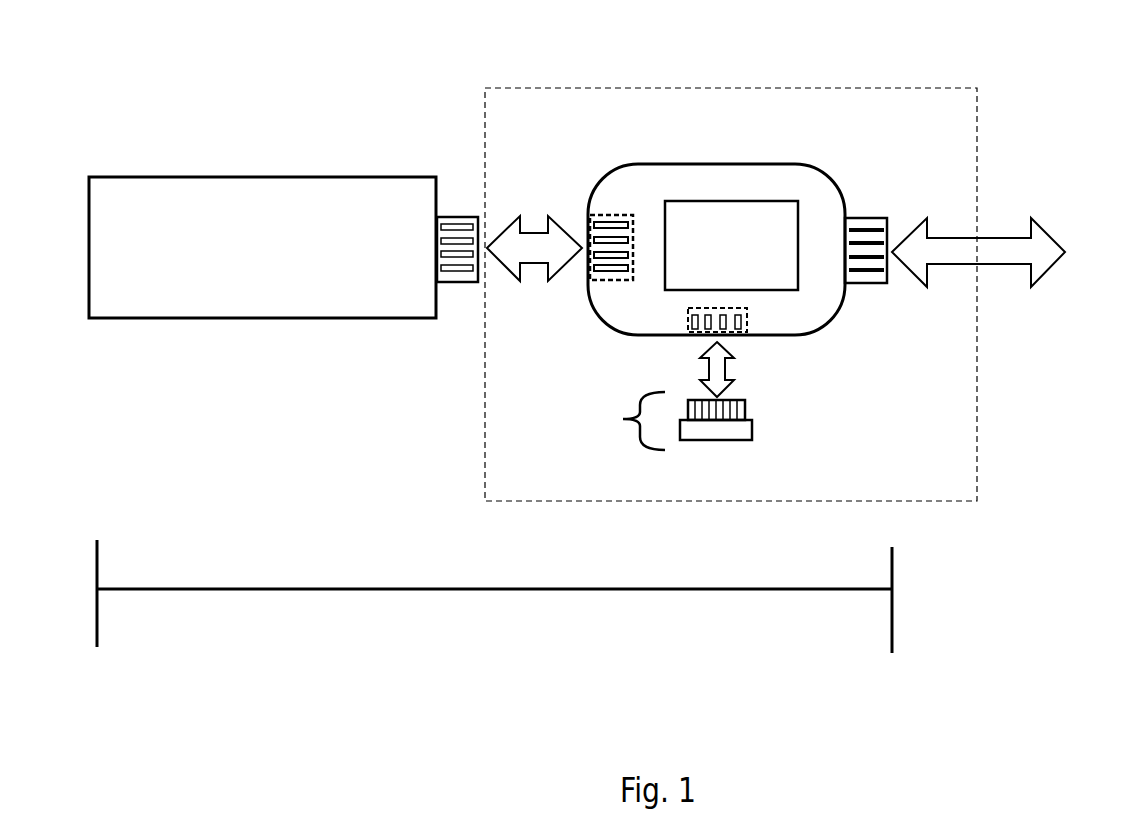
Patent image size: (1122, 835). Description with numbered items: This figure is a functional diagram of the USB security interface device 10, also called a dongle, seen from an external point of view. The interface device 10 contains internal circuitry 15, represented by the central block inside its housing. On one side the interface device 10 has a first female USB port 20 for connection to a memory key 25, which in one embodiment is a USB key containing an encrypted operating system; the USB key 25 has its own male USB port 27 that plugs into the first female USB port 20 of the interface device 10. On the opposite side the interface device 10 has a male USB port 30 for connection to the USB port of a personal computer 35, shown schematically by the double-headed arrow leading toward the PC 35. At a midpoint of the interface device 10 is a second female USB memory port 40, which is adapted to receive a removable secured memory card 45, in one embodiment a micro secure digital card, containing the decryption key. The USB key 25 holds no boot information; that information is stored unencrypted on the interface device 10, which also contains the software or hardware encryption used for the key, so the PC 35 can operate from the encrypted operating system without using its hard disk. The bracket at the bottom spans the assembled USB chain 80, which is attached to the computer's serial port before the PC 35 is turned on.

The USB security interface device 10 is at (728, 190).
The internal circuitry 15 is at (763, 248).
The first female USB port 20 is at (588, 213).
The memory key 25 is at (158, 243).
The male USB port 27 is at (458, 213).
The male USB port 30 is at (870, 215).
The personal computer 35 is at (1007, 252).
The second female USB memory port 40 is at (749, 325).
The removable secured memory card 45 is at (749, 413).
The USB chain 80 is at (494, 601).